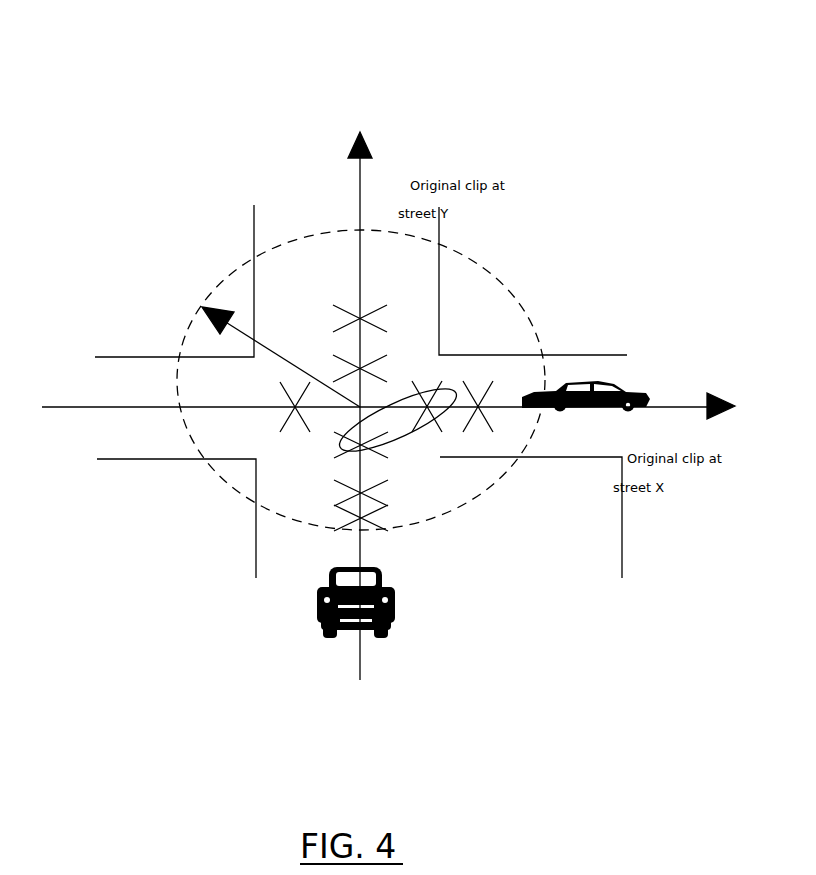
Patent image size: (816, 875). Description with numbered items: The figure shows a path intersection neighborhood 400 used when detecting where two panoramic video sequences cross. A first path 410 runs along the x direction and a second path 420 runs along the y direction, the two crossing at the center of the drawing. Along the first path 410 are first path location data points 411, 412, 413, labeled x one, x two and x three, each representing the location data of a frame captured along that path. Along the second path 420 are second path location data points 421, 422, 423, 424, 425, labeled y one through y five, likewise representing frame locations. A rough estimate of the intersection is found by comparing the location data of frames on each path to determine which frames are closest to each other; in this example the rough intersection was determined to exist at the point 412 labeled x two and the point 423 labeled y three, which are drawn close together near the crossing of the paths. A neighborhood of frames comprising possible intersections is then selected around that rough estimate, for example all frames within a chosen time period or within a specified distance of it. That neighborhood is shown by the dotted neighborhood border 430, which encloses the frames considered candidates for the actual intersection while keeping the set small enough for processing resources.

The path intersection neighborhood 400 is at (677, 42).
The first path 410 is at (694, 433).
The first path location data point 411 is at (283, 439).
The first path location data point 412 is at (451, 453).
The first path location data point 413 is at (515, 450).
The second path 420 is at (355, 190).
The second path location data point 421 is at (416, 525).
The second path location data point 422 is at (421, 496).
The second path location data point 423 is at (418, 468).
The second path location data point 424 is at (414, 375).
The second path location data point 425 is at (414, 325).
The neighborhood border 430 is at (183, 325).